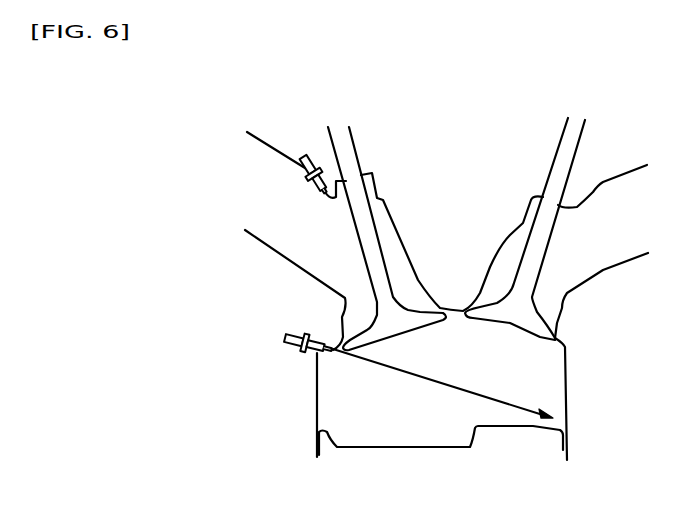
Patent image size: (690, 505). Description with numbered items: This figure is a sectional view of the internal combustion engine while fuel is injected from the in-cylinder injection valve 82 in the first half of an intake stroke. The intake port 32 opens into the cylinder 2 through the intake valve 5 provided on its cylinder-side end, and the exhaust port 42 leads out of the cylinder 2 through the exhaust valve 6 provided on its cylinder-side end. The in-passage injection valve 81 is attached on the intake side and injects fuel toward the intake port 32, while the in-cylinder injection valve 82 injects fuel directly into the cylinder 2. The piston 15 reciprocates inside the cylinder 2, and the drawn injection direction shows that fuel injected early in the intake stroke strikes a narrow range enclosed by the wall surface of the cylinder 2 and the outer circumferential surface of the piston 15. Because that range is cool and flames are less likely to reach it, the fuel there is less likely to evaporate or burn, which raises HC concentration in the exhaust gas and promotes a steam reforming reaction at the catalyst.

The cylinder 2 is at (545, 367).
The intake valve 5 is at (377, 327).
The exhaust valve 6 is at (528, 320).
The piston 15 is at (317, 428).
The intake port 32 is at (302, 242).
The exhaust port 42 is at (600, 259).
The in-passage injection valve 81 is at (310, 157).
The in-cylinder injection valve 82 is at (286, 342).